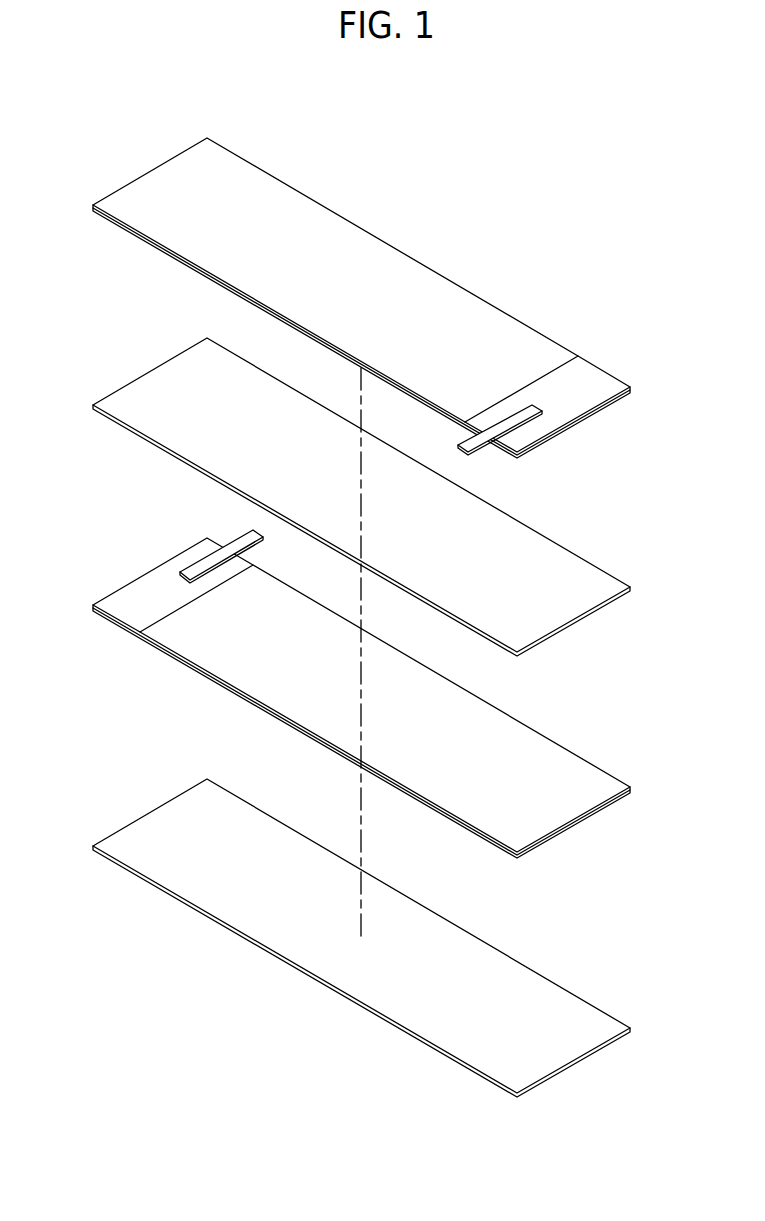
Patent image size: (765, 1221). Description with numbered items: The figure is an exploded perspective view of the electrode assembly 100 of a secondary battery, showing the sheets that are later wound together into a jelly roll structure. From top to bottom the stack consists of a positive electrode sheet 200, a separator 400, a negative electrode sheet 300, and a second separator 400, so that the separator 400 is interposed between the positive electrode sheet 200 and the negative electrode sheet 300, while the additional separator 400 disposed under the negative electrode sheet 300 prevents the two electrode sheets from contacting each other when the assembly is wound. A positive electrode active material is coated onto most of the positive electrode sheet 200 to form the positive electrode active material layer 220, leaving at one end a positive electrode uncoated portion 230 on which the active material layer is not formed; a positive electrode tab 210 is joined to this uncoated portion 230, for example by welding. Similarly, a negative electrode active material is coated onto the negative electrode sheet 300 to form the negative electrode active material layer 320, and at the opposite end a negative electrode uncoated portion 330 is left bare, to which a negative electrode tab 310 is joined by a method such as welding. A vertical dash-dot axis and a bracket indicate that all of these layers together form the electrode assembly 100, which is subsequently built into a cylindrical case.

The electrode assembly 100 is at (648, 1040).
The positive electrode sheet 200 is at (370, 319).
The positive electrode tab 210 is at (473, 448).
The positive electrode active material layer 220 is at (535, 342).
The positive electrode uncoated portion 230 is at (588, 377).
The negative electrode sheet 300 is at (339, 670).
The negative electrode tab 310 is at (243, 542).
The negative electrode active material layer 320 is at (192, 642).
The negative electrode uncoated portion 330 is at (132, 608).
The separator 400 is at (155, 385).